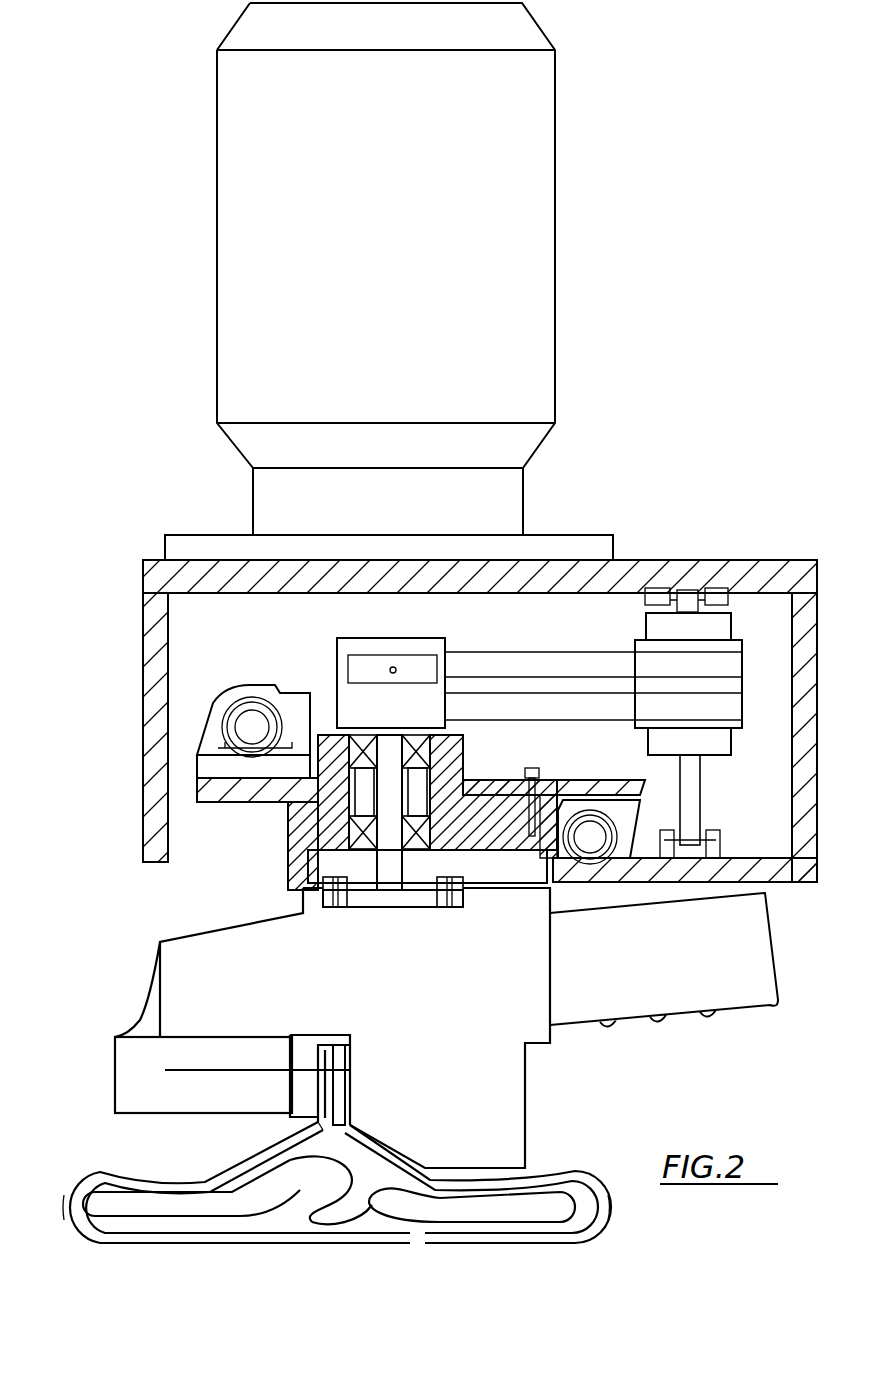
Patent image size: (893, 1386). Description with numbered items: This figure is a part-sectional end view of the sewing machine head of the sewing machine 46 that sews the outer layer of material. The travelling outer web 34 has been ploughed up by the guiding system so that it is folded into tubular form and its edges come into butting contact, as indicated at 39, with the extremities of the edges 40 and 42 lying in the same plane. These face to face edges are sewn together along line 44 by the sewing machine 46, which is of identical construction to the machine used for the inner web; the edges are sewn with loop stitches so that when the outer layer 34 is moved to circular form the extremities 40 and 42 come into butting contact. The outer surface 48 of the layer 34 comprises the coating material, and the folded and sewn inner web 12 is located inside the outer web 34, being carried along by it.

The inner web 12 is at (242, 1229).
The outer web 34 is at (58, 1195).
The butting contact 39 is at (320, 1113).
The edge extremity 40 is at (316, 1043).
The edge extremity 42 is at (341, 1053).
The sewing line 44 is at (230, 1068).
The sewing machine 46 is at (527, 1079).
The outer surface 48 is at (572, 1244).